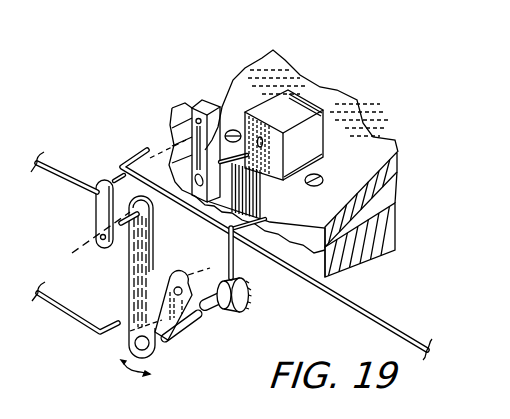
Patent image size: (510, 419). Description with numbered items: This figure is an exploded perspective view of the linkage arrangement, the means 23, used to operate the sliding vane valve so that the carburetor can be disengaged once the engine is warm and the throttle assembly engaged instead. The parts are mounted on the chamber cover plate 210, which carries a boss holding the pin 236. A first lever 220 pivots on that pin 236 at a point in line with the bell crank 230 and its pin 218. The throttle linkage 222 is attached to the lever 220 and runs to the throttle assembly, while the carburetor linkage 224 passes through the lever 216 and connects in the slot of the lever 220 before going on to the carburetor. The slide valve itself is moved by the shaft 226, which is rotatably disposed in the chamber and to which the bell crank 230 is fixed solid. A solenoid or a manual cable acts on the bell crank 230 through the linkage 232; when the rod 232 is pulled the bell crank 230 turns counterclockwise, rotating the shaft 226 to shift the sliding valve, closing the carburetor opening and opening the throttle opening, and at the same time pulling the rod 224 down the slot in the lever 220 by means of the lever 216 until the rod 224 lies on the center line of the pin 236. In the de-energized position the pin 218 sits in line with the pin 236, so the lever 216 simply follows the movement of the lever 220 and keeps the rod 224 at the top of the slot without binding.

The means interconnecting the carburetor and throttle assembly 23 is at (118, 100).
The chamber cover plate 210 is at (375, 147).
The lever 216 is at (97, 215).
The pin 218 is at (131, 206).
The first lever 220 is at (210, 103).
The throttle linkage 222 is at (367, 314).
The carburetor linkage 224 is at (62, 162).
The shaft 226 is at (195, 313).
The bell crank 230 is at (128, 335).
The linkage 232 is at (54, 301).
The pin 236 is at (328, 132).